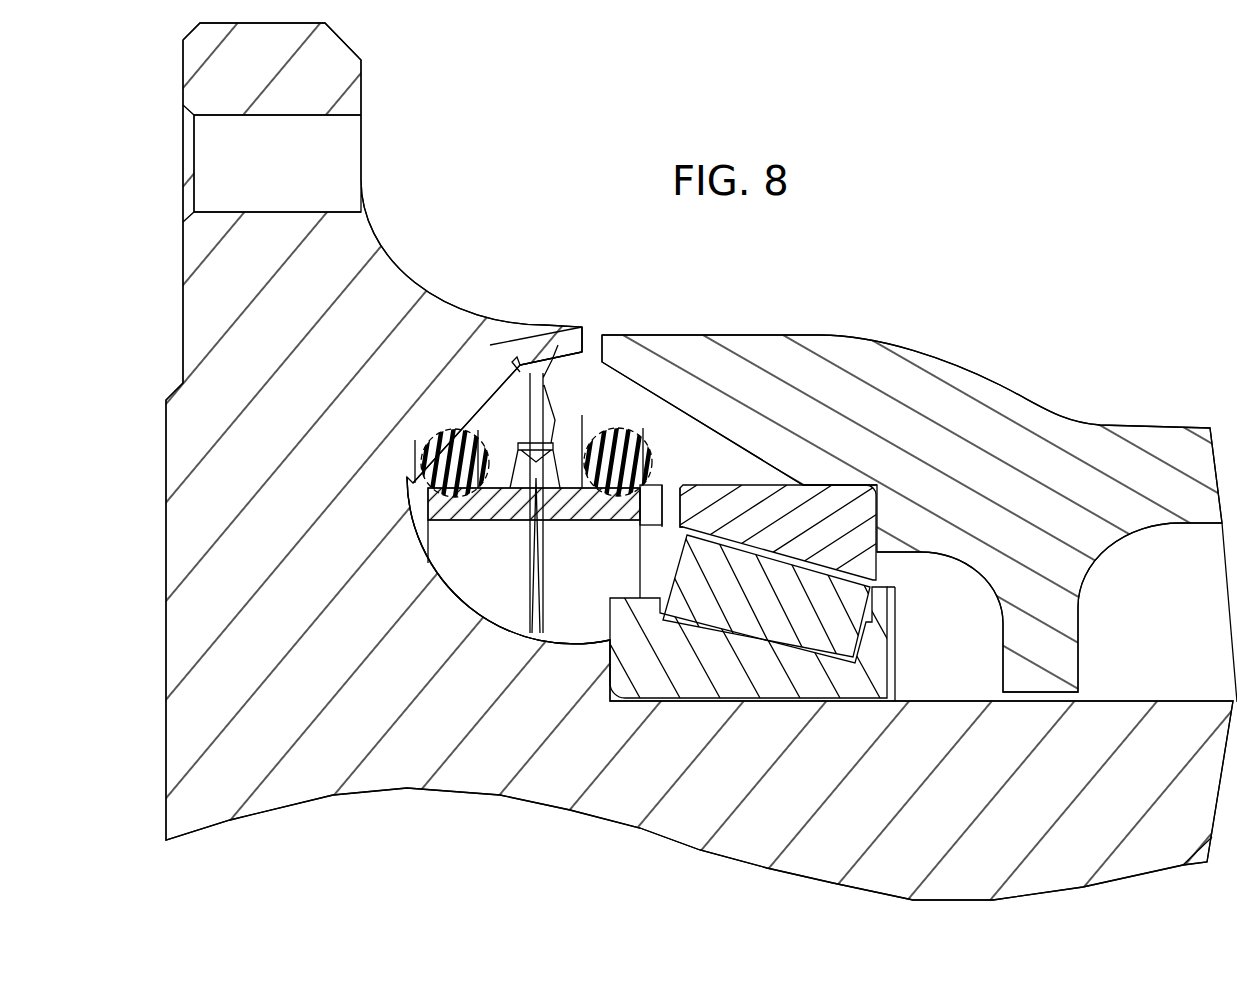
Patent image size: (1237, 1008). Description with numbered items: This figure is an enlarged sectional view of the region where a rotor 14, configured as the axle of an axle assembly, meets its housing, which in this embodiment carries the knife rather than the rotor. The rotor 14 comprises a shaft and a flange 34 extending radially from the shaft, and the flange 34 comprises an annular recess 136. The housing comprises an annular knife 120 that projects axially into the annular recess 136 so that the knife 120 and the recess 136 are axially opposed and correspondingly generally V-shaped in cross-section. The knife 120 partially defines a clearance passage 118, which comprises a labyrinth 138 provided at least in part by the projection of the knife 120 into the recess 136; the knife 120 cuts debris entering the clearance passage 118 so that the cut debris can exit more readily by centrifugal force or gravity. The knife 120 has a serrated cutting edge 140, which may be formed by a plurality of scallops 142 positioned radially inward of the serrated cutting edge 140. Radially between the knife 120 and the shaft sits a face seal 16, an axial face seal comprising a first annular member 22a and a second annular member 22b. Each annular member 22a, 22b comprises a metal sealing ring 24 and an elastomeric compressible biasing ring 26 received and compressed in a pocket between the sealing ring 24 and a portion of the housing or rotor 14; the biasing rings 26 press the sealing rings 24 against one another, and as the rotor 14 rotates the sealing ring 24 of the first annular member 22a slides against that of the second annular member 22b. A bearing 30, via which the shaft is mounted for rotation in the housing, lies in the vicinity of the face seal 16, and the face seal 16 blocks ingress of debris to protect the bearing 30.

The rotor 14 is at (439, 250).
The flange 34 is at (330, 77).
The clearance passage 118 is at (600, 333).
The annular recess 136 is at (527, 360).
The labyrinth 138 is at (548, 345).
The serrated cutting edge 140 is at (532, 366).
The scallops 142 is at (537, 372).
The knife 120 is at (553, 377).
The compressible biasing ring 26 is at (467, 472).
The sealing ring 24 is at (508, 508).
The first annular member 22a is at (468, 549).
The face seal 16 is at (473, 592).
The bearing 30 is at (878, 488).
The second annular member 22b is at (576, 626).